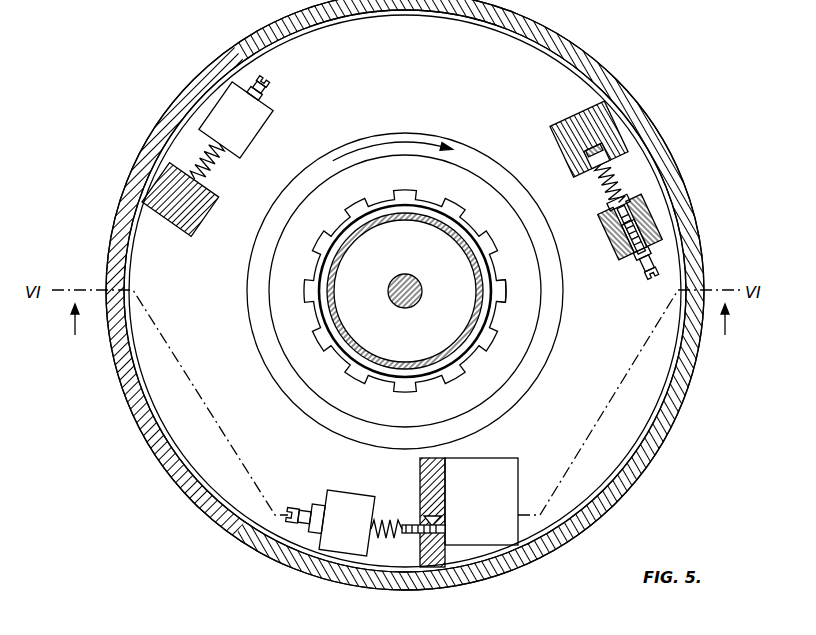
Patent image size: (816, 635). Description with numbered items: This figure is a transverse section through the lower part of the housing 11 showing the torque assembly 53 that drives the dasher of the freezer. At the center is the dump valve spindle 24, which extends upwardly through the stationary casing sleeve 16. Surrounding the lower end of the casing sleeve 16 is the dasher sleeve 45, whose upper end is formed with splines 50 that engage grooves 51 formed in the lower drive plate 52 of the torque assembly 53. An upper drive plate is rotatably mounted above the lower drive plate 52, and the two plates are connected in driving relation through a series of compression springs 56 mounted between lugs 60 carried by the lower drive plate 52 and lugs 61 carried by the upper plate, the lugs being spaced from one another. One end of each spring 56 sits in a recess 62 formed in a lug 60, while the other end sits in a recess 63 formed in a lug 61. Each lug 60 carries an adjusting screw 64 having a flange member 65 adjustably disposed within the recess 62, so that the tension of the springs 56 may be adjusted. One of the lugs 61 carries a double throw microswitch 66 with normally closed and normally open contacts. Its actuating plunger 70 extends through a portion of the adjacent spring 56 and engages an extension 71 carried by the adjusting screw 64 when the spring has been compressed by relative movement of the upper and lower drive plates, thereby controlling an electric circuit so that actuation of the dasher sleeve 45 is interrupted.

The housing 11 is at (690, 384).
The casing sleeve 16 is at (478, 272).
The dump valve spindle 24 is at (389, 289).
The dasher sleeve 45 is at (458, 363).
The splines 50 is at (482, 343).
The grooves 51 is at (503, 290).
The lower drive plate 52 is at (686, 349).
The torque assembly 53 is at (646, 176).
The compression springs 56 is at (212, 168).
The lugs 60 is at (261, 130).
The lugs 61 is at (203, 212).
The recess 62 is at (641, 225).
The recess 63 is at (606, 138).
The adjusting screw 64 is at (258, 88).
The flange member 65 is at (645, 213).
The double throw microswitch 66 is at (508, 473).
The actuating plunger 70 is at (433, 527).
The extension 71 is at (616, 208).